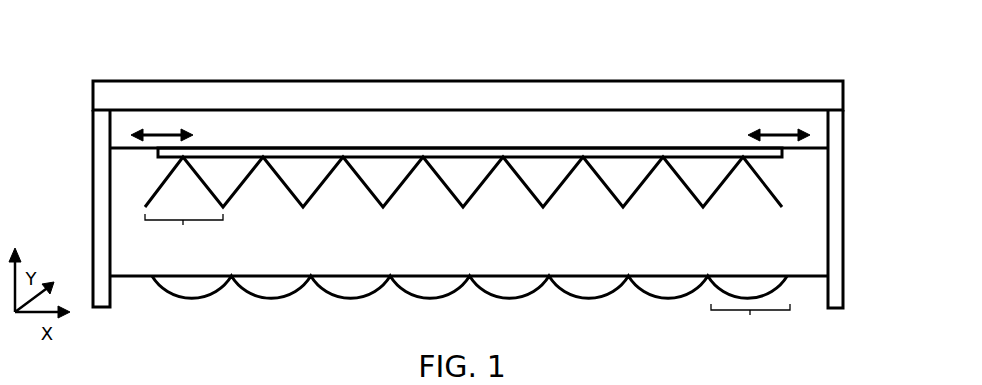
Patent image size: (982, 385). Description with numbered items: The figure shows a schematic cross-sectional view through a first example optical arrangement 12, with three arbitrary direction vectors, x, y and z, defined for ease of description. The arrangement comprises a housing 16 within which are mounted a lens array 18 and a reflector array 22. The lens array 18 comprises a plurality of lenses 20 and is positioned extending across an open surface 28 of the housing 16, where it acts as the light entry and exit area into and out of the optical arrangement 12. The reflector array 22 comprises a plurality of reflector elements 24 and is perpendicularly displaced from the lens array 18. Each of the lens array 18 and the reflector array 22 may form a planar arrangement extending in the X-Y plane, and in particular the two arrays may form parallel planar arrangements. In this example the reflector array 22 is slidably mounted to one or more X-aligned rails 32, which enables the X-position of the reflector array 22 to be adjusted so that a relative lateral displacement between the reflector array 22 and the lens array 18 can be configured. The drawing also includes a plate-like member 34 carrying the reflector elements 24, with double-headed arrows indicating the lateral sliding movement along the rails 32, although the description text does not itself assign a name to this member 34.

The optical arrangement 12 is at (118, 54).
The housing 16 is at (92, 131).
The lens array 18 is at (685, 273).
The lens 20 is at (750, 323).
The reflector array 22 is at (770, 188).
The reflector element 24 is at (184, 233).
The open surface 28 is at (151, 317).
The X-aligned rail 32 is at (826, 149).
The movable plate 34 is at (363, 148).